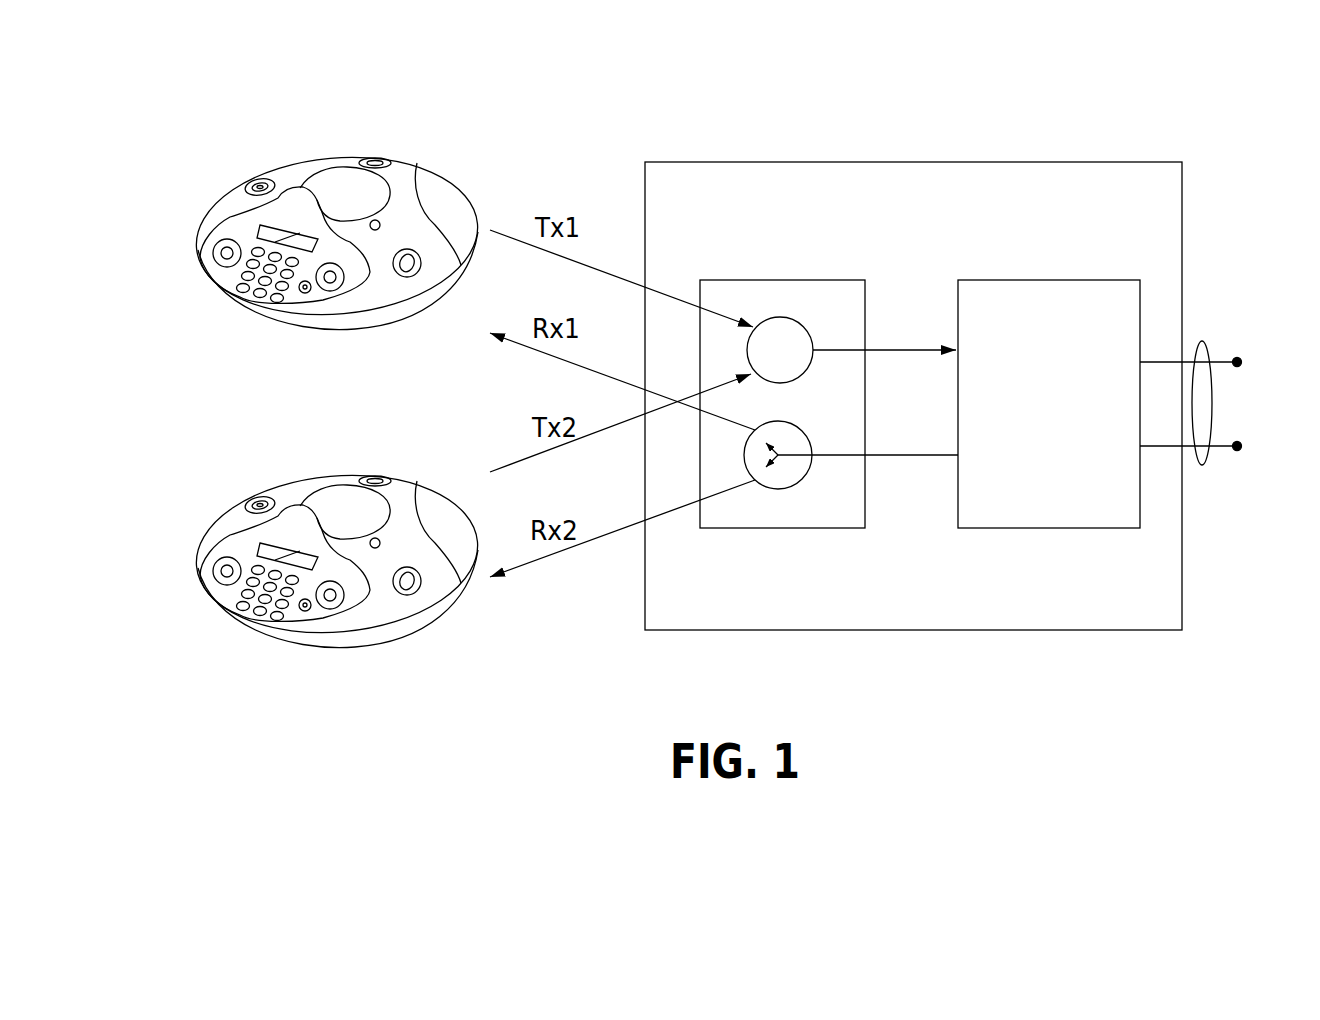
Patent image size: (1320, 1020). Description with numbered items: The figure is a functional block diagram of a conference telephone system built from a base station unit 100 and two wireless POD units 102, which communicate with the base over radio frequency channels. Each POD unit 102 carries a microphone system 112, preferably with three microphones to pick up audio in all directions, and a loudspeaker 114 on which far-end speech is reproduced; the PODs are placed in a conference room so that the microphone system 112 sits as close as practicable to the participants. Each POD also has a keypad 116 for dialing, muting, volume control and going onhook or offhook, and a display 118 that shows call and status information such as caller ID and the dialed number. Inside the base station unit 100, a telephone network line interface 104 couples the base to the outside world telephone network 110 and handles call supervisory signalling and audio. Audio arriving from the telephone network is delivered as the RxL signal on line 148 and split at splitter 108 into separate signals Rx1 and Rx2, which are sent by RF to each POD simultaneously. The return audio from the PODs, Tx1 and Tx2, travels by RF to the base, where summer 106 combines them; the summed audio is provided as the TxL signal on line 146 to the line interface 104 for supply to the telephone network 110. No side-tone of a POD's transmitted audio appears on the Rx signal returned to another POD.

The base station unit 100 is at (912, 162).
The wireless POD unit 102 is at (443, 190).
The telephone network line interface 104 is at (1075, 279).
The summer 106 is at (780, 316).
The splitter 108 is at (778, 489).
The outside world telephone network 110 is at (1200, 470).
The microphone system 112 is at (262, 180).
The loudspeaker 114 is at (348, 180).
The keypad 116 is at (223, 313).
The display 118 is at (263, 233).
The line carrying TxL signal 146 is at (913, 352).
The line carrying RxL signal 148 is at (917, 460).